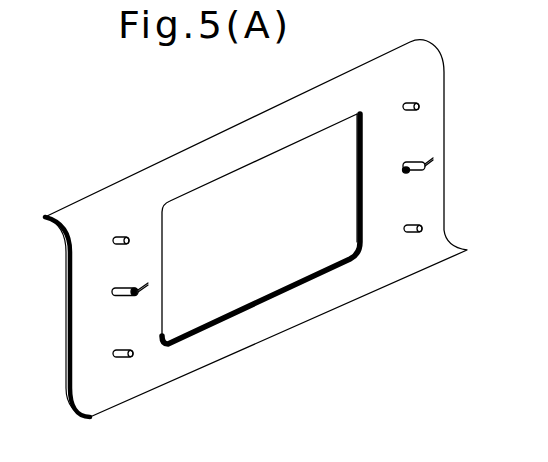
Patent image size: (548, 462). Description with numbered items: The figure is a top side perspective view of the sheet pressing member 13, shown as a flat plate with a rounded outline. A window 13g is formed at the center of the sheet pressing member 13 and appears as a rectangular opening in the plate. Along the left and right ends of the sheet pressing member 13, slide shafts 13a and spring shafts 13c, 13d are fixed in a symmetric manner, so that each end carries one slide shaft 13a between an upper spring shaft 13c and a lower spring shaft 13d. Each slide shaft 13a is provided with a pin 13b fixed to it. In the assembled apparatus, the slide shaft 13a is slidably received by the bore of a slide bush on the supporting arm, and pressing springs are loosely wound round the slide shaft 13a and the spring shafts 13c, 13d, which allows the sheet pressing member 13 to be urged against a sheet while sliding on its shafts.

The sheet pressing member 13 is at (76, 214).
The window 13g is at (234, 191).
The slide shaft 13a is at (113, 293).
The pin 13b is at (152, 275).
The spring shaft 13c is at (113, 241).
The spring shaft 13d is at (117, 356).